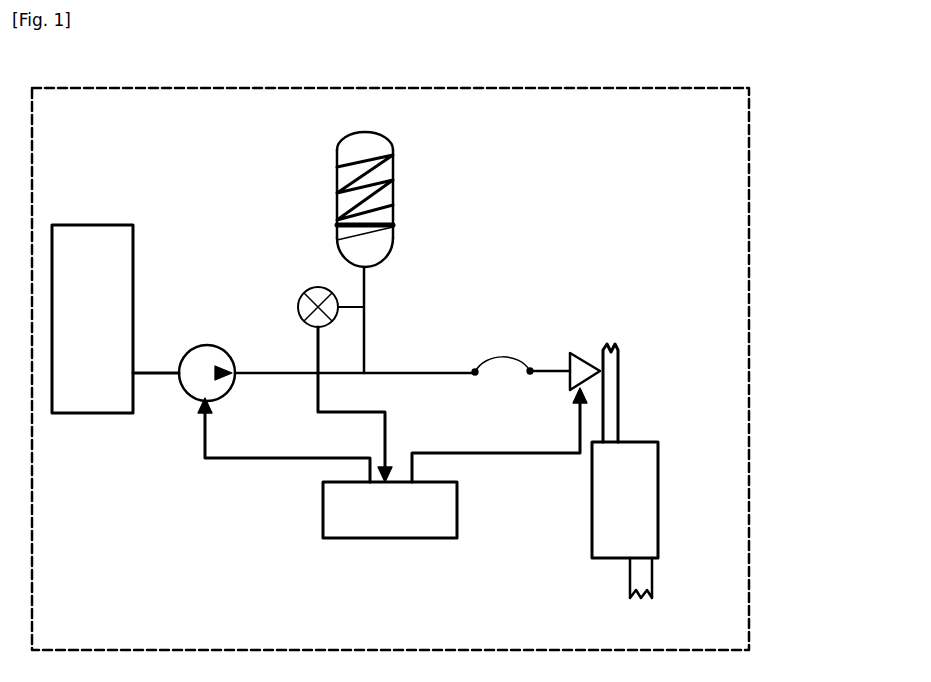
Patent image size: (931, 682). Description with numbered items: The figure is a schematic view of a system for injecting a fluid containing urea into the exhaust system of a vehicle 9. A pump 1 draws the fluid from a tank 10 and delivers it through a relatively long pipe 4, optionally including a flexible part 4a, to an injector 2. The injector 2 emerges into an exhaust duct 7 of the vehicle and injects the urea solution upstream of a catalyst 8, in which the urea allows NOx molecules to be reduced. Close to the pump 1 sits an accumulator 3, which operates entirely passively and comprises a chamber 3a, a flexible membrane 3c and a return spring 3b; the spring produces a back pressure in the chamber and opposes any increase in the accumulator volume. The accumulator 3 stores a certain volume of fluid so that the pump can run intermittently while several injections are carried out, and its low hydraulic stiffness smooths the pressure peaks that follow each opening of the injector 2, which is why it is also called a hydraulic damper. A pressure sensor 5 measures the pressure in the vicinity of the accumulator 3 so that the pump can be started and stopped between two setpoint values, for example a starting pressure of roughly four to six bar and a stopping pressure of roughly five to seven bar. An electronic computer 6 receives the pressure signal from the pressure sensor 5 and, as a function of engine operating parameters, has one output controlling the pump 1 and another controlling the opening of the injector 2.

The pump 1 is at (198, 348).
The injector 2 is at (575, 352).
The accumulator 3 is at (337, 205).
The chamber 3a is at (393, 240).
The return spring 3b is at (393, 162).
The membrane 3c is at (337, 238).
The pipe 4 is at (410, 358).
The flexible part 4a is at (500, 352).
The pressure sensor 5 is at (300, 300).
The electronic computer 6 is at (457, 525).
The exhaust duct 7 is at (620, 405).
The catalyst 8 is at (658, 470).
The vehicle 9 is at (749, 578).
The tank 10 is at (92, 225).